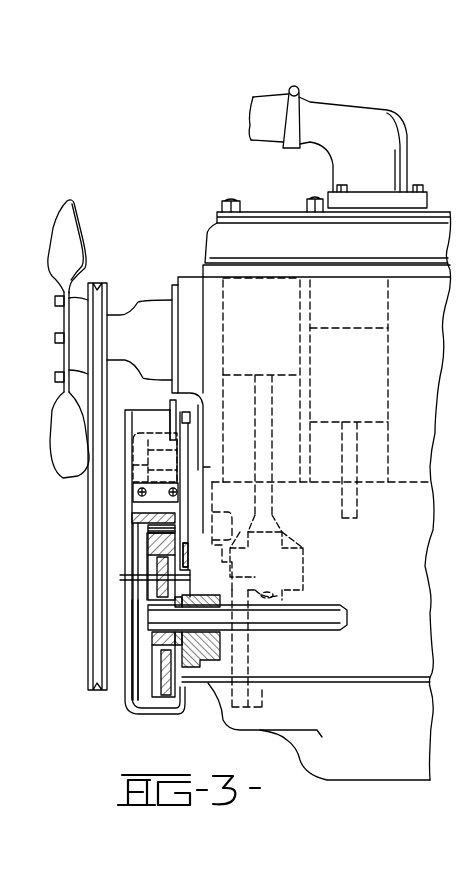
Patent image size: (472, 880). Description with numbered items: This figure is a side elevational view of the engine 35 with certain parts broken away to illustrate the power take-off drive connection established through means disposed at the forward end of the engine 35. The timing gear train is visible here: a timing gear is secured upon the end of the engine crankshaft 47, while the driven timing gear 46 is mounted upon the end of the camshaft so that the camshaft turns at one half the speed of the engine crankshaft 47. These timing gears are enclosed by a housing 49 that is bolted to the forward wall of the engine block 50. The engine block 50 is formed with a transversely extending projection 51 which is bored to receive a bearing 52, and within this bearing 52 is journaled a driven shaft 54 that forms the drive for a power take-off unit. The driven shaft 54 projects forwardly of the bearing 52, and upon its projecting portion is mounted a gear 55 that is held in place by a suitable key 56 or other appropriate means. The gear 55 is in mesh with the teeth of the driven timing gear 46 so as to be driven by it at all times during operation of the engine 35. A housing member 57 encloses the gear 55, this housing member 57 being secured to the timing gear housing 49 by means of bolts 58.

The engine 35 is at (188, 276).
The driven timing gear 46 is at (140, 532).
The engine crankshaft 47 is at (297, 562).
The housing 49 is at (133, 470).
The engine block 50 is at (207, 413).
The transversely extending projection 51 is at (120, 575).
The bearing 52 is at (213, 633).
The driven shaft 54 is at (332, 627).
The gear 55 is at (157, 688).
The key 56 is at (130, 630).
The housing member 57 is at (140, 515).
The bolts 58 is at (137, 493).